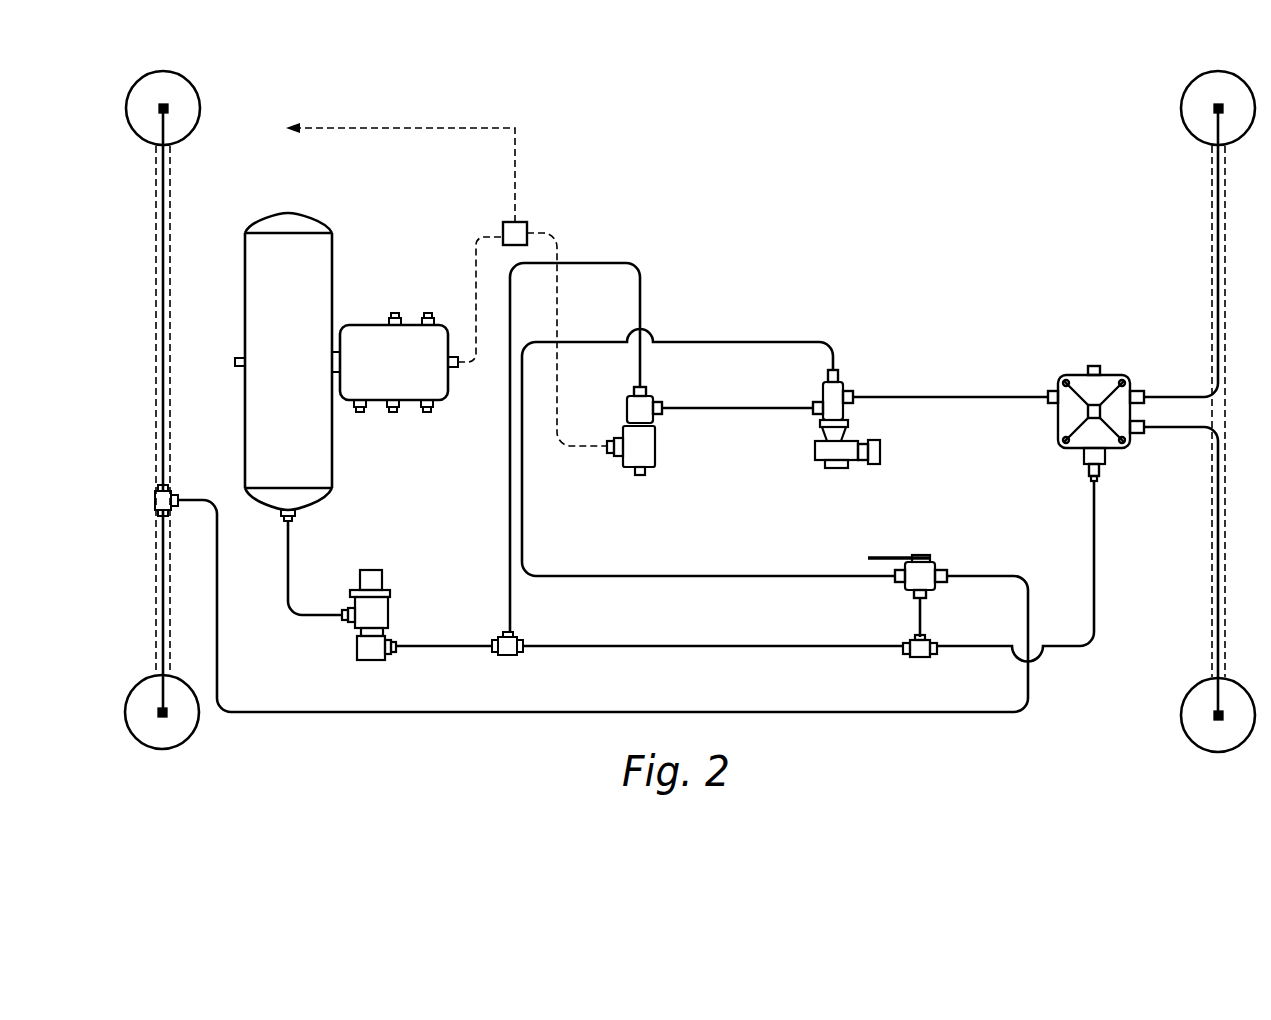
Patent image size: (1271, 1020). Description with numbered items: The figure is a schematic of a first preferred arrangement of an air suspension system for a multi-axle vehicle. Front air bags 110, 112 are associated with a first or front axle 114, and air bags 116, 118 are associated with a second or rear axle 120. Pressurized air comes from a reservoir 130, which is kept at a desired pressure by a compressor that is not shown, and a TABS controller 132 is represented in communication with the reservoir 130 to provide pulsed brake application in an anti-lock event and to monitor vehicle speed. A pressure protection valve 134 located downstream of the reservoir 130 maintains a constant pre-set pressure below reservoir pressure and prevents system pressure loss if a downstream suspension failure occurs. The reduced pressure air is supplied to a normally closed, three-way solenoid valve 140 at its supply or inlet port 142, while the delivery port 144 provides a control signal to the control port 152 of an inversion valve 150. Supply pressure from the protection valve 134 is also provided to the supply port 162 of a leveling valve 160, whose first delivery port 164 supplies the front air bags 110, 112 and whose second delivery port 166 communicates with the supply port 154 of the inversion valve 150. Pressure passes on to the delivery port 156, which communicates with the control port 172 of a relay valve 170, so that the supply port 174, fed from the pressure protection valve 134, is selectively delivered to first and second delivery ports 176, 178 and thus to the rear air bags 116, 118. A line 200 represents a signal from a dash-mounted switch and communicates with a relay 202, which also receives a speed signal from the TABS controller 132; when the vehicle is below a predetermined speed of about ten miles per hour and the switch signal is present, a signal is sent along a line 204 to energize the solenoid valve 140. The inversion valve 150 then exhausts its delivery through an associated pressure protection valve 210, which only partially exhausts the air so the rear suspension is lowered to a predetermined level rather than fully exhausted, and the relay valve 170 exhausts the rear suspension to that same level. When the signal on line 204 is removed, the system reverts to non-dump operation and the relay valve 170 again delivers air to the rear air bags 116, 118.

The front air bag 110 is at (188, 108).
The front air bag 112 is at (177, 732).
The front axle 114 is at (170, 225).
The rear air bag 116 is at (1200, 88).
The rear air bag 118 is at (1192, 737).
The rear axle 120 is at (1212, 258).
The reservoir 130 is at (310, 290).
The TABS controller 132 is at (420, 412).
The pressure protection valve 134 is at (402, 605).
The three-way solenoid valve 140 is at (668, 462).
The supply or inlet port 142 is at (643, 388).
The delivery port 144 is at (660, 414).
The inversion valve 150 is at (868, 379).
The control port 152 is at (815, 411).
The supply port 154 is at (838, 372).
The delivery port 156 is at (855, 401).
The leveling valve 160 is at (895, 548).
The supply port 162 is at (926, 596).
The first delivery port 164 is at (948, 570).
The second delivery port 166 is at (897, 584).
The relay valve 170 is at (1043, 422).
The control port 172 is at (1045, 392).
The supply port 174 is at (1100, 480).
The first delivery port 176 is at (1145, 393).
The second delivery port 178 is at (1145, 433).
The line 200 is at (373, 128).
The relay 202 is at (522, 222).
The line 204 is at (557, 320).
The pressure protection valve 210 is at (858, 462).